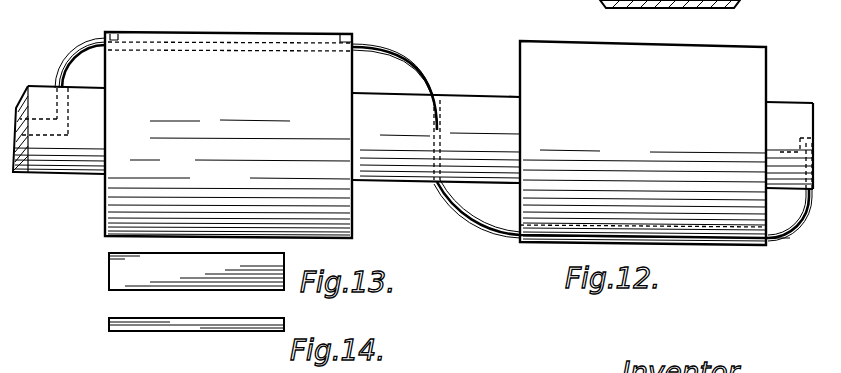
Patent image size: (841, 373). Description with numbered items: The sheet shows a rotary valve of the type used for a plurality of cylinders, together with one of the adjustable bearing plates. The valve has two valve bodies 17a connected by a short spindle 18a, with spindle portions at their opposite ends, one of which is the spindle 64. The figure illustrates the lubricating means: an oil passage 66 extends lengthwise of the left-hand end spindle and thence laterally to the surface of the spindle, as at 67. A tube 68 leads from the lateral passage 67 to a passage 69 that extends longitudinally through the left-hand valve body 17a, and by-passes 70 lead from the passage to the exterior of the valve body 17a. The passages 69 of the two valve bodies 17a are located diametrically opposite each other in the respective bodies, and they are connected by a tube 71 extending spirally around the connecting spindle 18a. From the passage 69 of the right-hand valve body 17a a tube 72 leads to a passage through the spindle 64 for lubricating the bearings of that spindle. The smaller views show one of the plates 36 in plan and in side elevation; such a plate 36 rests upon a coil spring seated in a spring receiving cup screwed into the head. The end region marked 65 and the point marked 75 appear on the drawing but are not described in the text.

In FIG. 12, the valve body 17a is at (228, 135).
In FIG. 12, the short spindle 18a is at (414, 137).
In FIG. 13, the plate 36 is at (196, 271).
In FIG. 14, the plate 36 is at (200, 325).
In FIG. 12, the spindle portion 64 is at (788, 115).
In FIG. 12, the plug 65 is at (18, 143).
In FIG. 12, the oil passage 66 is at (60, 132).
In FIG. 12, the lateral passage 67 is at (68, 98).
In FIG. 12, the tube 68 is at (90, 46).
In FIG. 12, the passage 69 is at (268, 52).
In FIG. 12, the by-pass 70 is at (120, 36).
In FIG. 12, the tube 71 is at (463, 212).
In FIG. 12, the tube 72 is at (771, 241).
In FIG. 12, the opening 75 is at (790, 156).